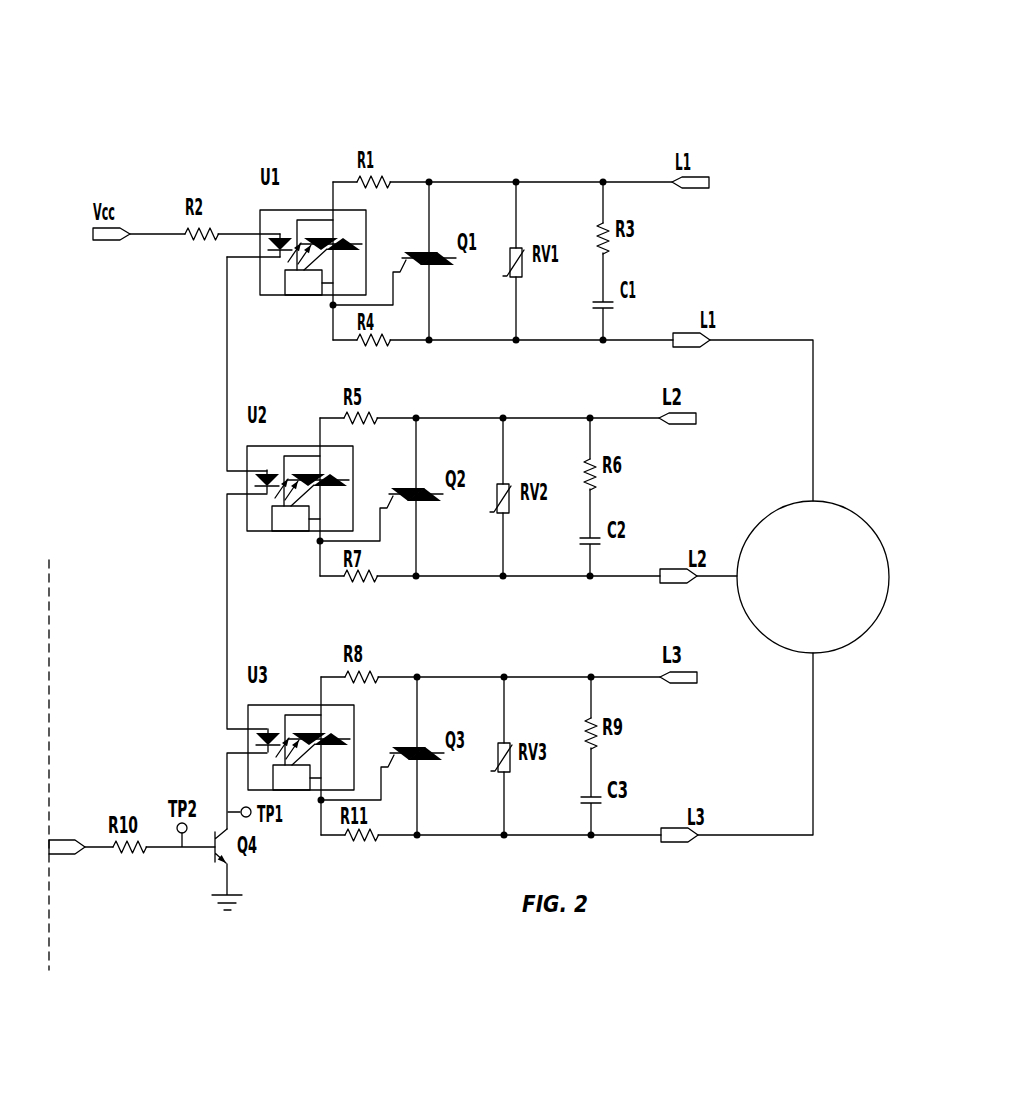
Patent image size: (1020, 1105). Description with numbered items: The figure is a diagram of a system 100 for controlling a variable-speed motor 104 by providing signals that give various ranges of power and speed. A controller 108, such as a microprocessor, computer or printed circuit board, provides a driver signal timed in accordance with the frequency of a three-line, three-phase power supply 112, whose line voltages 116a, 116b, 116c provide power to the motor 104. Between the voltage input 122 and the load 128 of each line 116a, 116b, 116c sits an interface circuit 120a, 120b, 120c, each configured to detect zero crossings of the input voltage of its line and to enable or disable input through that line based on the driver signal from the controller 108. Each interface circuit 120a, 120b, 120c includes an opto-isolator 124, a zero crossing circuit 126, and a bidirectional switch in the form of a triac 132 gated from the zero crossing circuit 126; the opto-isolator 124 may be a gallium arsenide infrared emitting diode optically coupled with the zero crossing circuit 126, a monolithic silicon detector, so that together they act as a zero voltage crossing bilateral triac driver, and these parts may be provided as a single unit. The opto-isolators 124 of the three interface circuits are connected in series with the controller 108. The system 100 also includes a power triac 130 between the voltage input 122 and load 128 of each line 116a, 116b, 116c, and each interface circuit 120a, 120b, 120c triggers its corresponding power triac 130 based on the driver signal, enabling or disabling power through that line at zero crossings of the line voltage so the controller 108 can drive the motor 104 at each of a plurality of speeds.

The system 100 is at (490, 74).
The variable-speed motor 104 is at (832, 503).
The controller 108 is at (50, 745).
The three-line, three-phase power supply 112 is at (726, 115).
The line voltage 116a is at (683, 210).
The line voltage 116b is at (683, 443).
The line voltage 116c is at (686, 706).
The interface circuit 120a is at (301, 172).
The interface circuit 120b is at (290, 410).
The interface circuit 120c is at (290, 668).
The voltage input 122 is at (702, 177).
The opto-isolator 124 is at (269, 239).
The zero crossing circuit 126 is at (303, 284).
The load 128 is at (685, 333).
The power triac 130 is at (432, 250).
The triac 132 is at (347, 238).